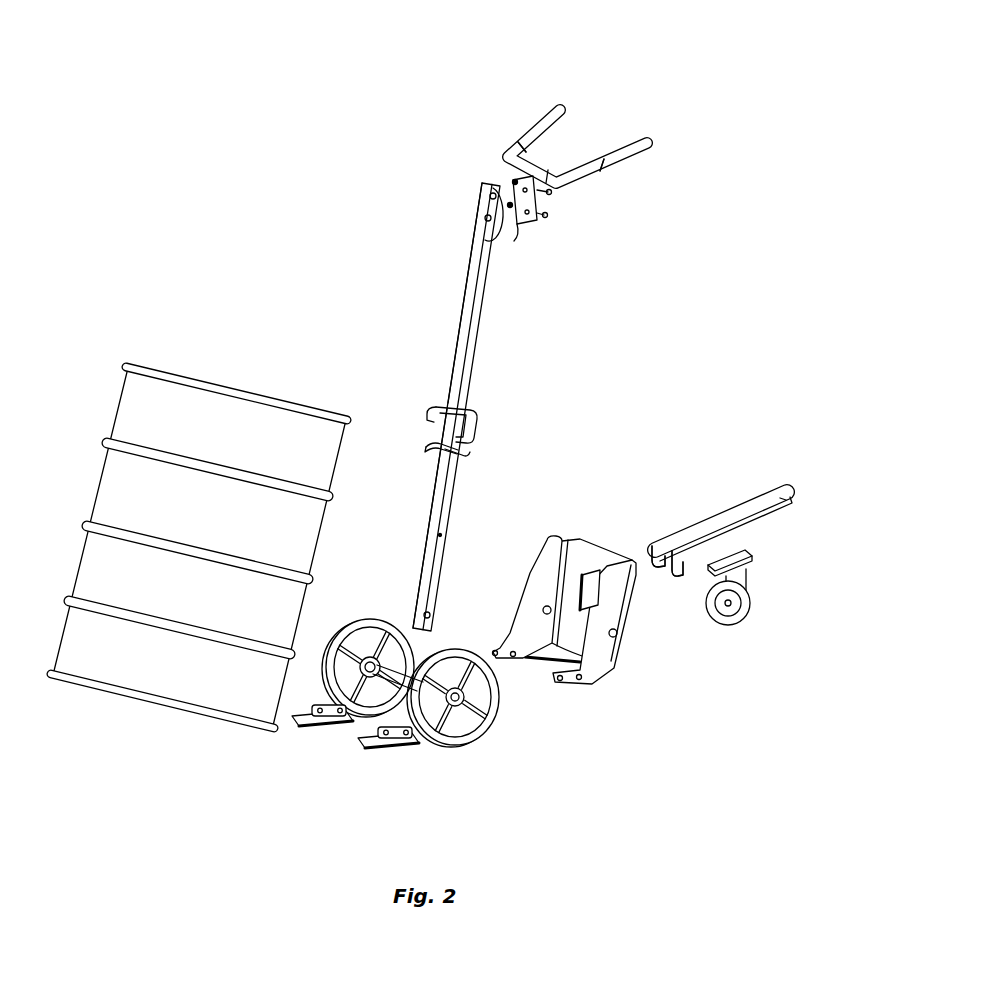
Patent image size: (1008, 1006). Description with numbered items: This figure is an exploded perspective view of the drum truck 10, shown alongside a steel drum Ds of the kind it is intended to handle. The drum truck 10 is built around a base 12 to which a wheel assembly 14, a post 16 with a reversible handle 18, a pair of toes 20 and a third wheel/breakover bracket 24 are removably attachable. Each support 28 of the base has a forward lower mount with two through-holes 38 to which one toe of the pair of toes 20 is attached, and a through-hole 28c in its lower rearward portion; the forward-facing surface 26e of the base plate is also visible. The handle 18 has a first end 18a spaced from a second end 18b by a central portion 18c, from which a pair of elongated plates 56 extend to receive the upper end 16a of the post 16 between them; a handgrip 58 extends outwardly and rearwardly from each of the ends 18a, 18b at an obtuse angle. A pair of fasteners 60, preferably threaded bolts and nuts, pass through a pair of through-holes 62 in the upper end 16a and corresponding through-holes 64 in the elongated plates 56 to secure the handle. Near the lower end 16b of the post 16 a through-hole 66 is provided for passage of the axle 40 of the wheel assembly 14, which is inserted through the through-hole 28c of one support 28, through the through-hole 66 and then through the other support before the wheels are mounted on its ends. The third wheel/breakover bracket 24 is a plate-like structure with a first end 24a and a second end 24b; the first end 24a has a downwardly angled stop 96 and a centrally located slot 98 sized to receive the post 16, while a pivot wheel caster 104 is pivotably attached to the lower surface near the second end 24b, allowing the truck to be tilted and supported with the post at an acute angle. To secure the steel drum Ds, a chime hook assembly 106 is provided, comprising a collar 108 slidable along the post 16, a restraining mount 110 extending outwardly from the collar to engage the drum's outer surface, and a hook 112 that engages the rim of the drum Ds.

The drum truck 10 is at (296, 254).
The base 12 is at (627, 684).
The wheel assembly 14 is at (485, 758).
The post 16 is at (484, 293).
The upper end of the post 16a is at (463, 288).
The lower end of the post 16b is at (422, 562).
The reversible handle 18 is at (510, 116).
The first end of the handle 18a is at (588, 183).
The second end of the handle 18b is at (510, 146).
The central portion of the handle 18c is at (558, 160).
The toes 20 is at (409, 765).
The third wheel/breakover bracket 24 is at (798, 562).
The first end of the breakover bracket 24a is at (690, 533).
The second end of the breakover bracket 24b is at (783, 490).
The forward-facing surface of the base plate 26e is at (582, 560).
The support 28 is at (614, 610).
The through-hole in the support 28c is at (619, 636).
The through-holes of the mount 38 is at (560, 682).
The axle 40 is at (390, 675).
The elongated plates 56 is at (518, 232).
The handgrip 58 is at (551, 104).
The fasteners 60 is at (573, 200).
The through-holes in the upper end of the post 62 is at (497, 224).
The through-holes in the elongated plates 64 is at (513, 181).
The through-hole in the lower end of the post 66 is at (430, 615).
The stop 96 is at (678, 574).
The slot 98 is at (672, 548).
The pivot wheel caster 104 is at (747, 615).
The chime hook assembly 106 is at (477, 415).
The collar 108 is at (443, 430).
The restraining mount 110 is at (462, 455).
The hook 112 is at (432, 409).
The steel drum Ds is at (120, 402).